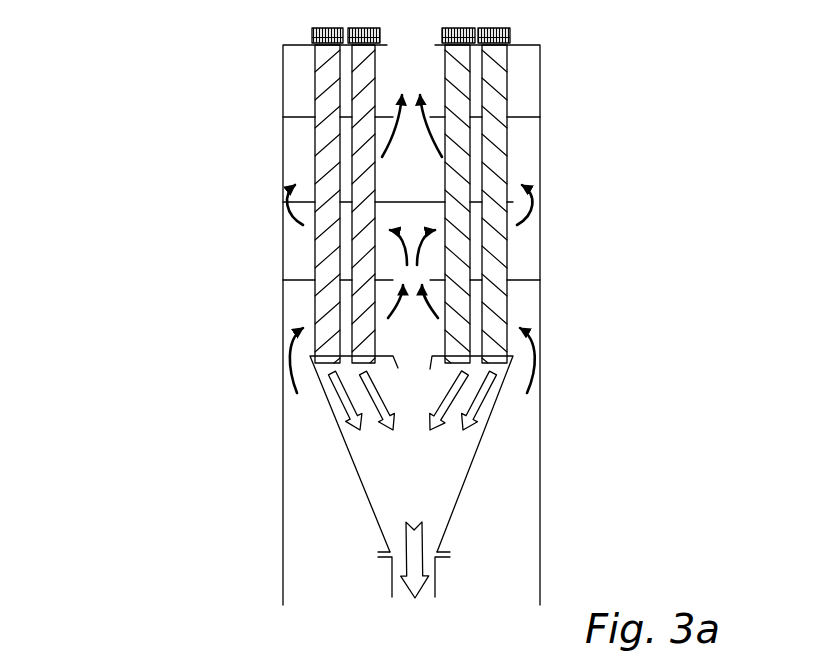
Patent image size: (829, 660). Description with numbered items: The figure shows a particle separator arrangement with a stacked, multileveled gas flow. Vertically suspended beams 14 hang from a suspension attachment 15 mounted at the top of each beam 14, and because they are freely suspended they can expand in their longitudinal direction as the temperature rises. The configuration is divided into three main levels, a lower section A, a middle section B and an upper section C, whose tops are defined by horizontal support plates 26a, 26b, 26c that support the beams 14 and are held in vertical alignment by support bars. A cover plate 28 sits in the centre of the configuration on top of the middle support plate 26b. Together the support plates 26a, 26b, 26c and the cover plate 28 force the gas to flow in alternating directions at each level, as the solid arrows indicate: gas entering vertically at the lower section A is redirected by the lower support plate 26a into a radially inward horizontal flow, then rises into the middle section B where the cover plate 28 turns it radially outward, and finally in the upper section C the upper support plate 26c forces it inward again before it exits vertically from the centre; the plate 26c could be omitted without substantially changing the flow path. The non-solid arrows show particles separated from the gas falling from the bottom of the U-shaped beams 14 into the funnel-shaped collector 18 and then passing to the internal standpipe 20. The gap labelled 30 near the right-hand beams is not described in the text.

The suspension attachment 15 is at (308, 43).
The beam 14 is at (495, 293).
The lower support plate 26a is at (300, 286).
The middle support plate 26b is at (300, 193).
The upper support plate 26c is at (291, 117).
The cover plate 28 is at (415, 200).
The bypass gap 30 is at (524, 344).
The funnel-shaped collector 18 is at (460, 458).
The internal standpipe 20 is at (436, 589).
The lower section A is at (300, 310).
The middle section B is at (287, 247).
The upper section C is at (300, 149).